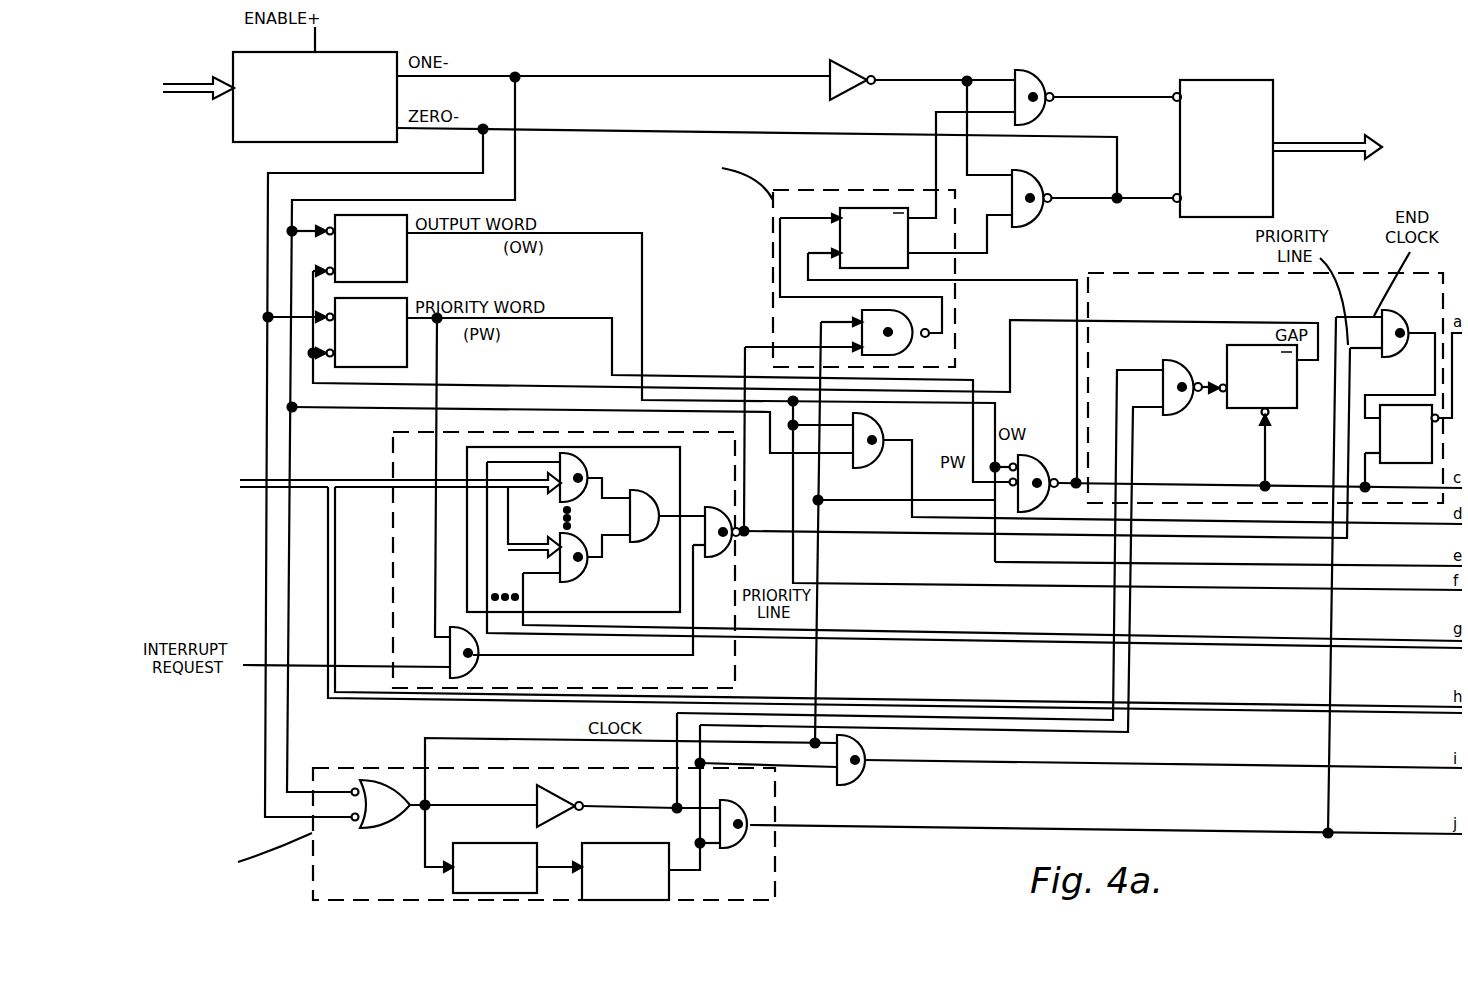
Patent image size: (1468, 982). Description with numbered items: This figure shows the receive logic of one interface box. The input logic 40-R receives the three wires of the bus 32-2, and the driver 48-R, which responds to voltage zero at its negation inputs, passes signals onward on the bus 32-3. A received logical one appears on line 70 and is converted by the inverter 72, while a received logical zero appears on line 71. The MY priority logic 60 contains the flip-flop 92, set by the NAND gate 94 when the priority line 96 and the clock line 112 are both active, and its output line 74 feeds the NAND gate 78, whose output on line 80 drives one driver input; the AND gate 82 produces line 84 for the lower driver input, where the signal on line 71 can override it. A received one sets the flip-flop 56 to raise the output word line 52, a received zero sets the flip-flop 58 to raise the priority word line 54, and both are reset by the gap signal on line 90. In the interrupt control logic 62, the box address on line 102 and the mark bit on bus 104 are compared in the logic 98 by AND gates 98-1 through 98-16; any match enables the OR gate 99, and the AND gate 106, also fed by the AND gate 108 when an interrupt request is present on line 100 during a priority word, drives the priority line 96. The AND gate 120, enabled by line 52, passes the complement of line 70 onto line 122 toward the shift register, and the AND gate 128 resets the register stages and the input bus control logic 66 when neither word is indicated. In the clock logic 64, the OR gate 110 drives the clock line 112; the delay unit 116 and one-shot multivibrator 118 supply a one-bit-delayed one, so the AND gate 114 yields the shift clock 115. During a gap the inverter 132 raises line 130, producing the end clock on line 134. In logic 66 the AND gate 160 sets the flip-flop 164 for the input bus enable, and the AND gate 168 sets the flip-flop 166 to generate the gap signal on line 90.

The bus 32-2 is at (179, 83).
The input logic 40-R is at (373, 52).
The line 70 is at (466, 76).
The line 71 is at (655, 128).
The inverter 72 is at (838, 66).
The line 74 is at (937, 160).
The NAND gate 78 is at (1020, 70).
The line 80 is at (1085, 97).
The AND gate 82 is at (1030, 172).
The line 84 is at (1141, 195).
The driver 48-R is at (1225, 80).
The bus 32-3 is at (1310, 143).
The flip-flop 56 is at (408, 250).
The flip-flop 58 is at (407, 300).
The priority word line 54 is at (587, 318).
The output word line 52 is at (644, 285).
The line 90 is at (495, 385).
The MY priority logic 60 is at (773, 228).
The flip-flop 92 is at (906, 257).
The NAND gate 94 is at (860, 336).
The input bus control logic 66 is at (1180, 273).
The AND gate 160 is at (1392, 355).
The AND gate 168 is at (1170, 415).
The flip-flop 166 is at (1240, 408).
The flip-flop 164 is at (1425, 458).
The priority line 96 is at (1347, 457).
The line 102 is at (255, 478).
The interrupt control logic 62 is at (393, 440).
The logic 98 is at (680, 470).
The AND gate 98-1 is at (583, 458).
The AND gate 98-16 is at (585, 580).
The OR gate 99 is at (642, 495).
The AND gate 106 is at (710, 557).
The AND gate 108 is at (450, 648).
The AND gate 120 is at (868, 468).
The line 122 is at (913, 470).
The AND gate 128 is at (1038, 460).
The bus 104 is at (768, 641).
The line 100 is at (322, 668).
The OR gate 110 is at (378, 780).
The clock line 112 is at (432, 805).
The delay unit 116 is at (490, 843).
The one-shot multivibrator 118 is at (650, 843).
The inverter 132 is at (552, 798).
The line 130 is at (710, 806).
The clock logic 64 is at (775, 878).
The line 134 is at (895, 830).
The AND gate 114 is at (860, 775).
The shift clock line 115 is at (968, 765).